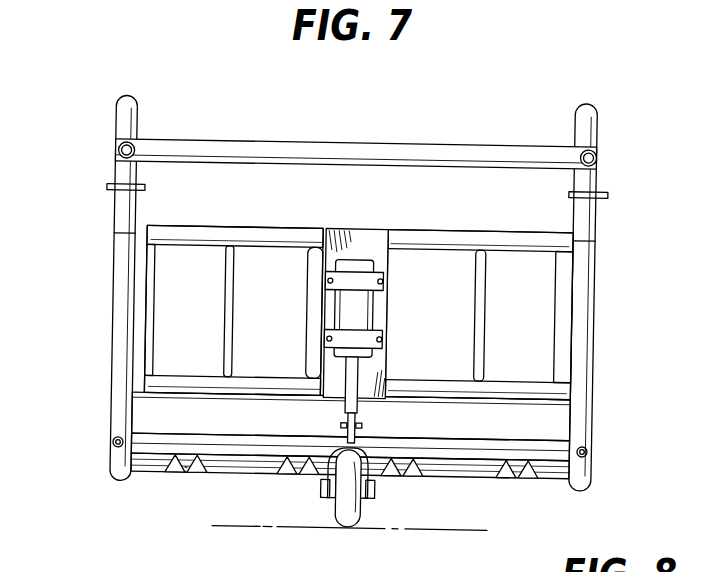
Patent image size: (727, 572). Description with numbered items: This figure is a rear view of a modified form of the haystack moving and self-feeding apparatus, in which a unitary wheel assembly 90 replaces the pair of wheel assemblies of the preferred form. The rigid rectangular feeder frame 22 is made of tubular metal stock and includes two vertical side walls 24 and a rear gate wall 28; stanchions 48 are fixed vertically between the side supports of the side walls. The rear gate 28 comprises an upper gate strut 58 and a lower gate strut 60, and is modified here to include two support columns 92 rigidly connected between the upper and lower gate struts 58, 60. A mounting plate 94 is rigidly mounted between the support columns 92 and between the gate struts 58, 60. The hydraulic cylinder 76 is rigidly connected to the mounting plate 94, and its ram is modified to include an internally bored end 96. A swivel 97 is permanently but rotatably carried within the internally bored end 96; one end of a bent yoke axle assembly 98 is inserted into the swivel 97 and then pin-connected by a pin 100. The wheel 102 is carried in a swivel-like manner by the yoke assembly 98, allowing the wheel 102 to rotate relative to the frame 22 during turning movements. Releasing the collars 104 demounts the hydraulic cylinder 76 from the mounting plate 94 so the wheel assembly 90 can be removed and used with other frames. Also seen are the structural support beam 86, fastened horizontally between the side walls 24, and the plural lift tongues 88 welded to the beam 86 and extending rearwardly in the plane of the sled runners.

The feeder frame 22 is at (598, 128).
The vertical side wall 24 is at (111, 169).
The rear gate wall 28 is at (303, 286).
The stanchion 48 is at (230, 300).
The upper gate strut 58 is at (479, 313).
The lower gate strut 60 is at (479, 398).
The hydraulic cylinder 76 is at (362, 310).
The structural support beam 86 is at (553, 477).
The lift tongue 88 is at (191, 478).
The unitary wheel assembly 90 is at (392, 503).
The support column 92 is at (313, 323).
The mounting plate 94 is at (356, 242).
The internally bored end 96 is at (358, 403).
The swivel 97 is at (348, 415).
The bent yoke axle assembly 98 is at (326, 478).
The pin 100 is at (364, 427).
The wheel 102 is at (349, 512).
The collar 104 is at (345, 284).